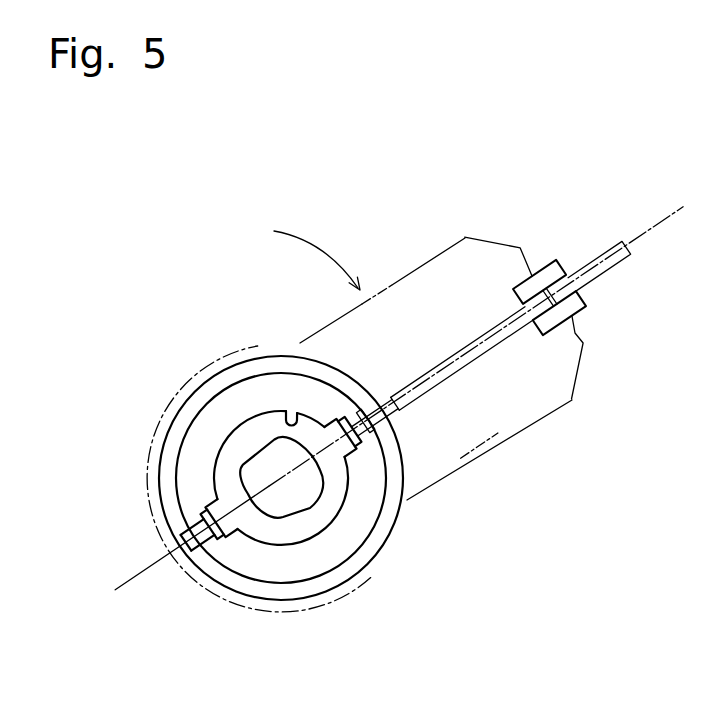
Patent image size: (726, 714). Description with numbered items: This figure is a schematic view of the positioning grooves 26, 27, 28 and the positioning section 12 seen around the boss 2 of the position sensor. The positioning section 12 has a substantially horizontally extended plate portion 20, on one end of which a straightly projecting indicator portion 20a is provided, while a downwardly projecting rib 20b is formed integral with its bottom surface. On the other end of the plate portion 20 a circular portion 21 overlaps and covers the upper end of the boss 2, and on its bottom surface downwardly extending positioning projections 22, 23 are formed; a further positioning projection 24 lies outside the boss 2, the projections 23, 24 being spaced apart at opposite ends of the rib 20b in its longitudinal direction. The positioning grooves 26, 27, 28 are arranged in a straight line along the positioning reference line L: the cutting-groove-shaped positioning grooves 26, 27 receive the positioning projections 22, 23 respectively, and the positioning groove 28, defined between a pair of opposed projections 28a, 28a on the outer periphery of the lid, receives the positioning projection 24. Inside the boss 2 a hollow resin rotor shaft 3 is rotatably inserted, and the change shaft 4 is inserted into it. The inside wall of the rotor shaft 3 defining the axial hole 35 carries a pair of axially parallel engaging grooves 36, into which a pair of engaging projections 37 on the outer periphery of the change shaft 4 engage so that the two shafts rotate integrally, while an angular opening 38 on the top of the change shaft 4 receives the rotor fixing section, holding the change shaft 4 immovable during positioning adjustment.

The boss 2 is at (172, 436).
The rotor shaft 3 is at (173, 391).
The change shaft 4 is at (218, 418).
The positioning section 12 is at (304, 252).
The plate portion 20 is at (388, 288).
The indicator portion 20a is at (579, 262).
The rib 20b is at (571, 402).
The circular portion 21 is at (357, 576).
The positioning projection 22 is at (185, 520).
The positioning projection 23 is at (470, 461).
The positioning projection 24 is at (548, 280).
The positioning groove 26 is at (179, 548).
The positioning groove 27 is at (392, 398).
The positioning groove 28 is at (580, 291).
The opposed projections 28a is at (529, 276).
The axial hole 35 is at (291, 421).
The engaging grooves 36 is at (333, 422).
The engaging projections 37 is at (227, 522).
The angular opening 38 is at (285, 495).
The positioning reference line L is at (412, 391).